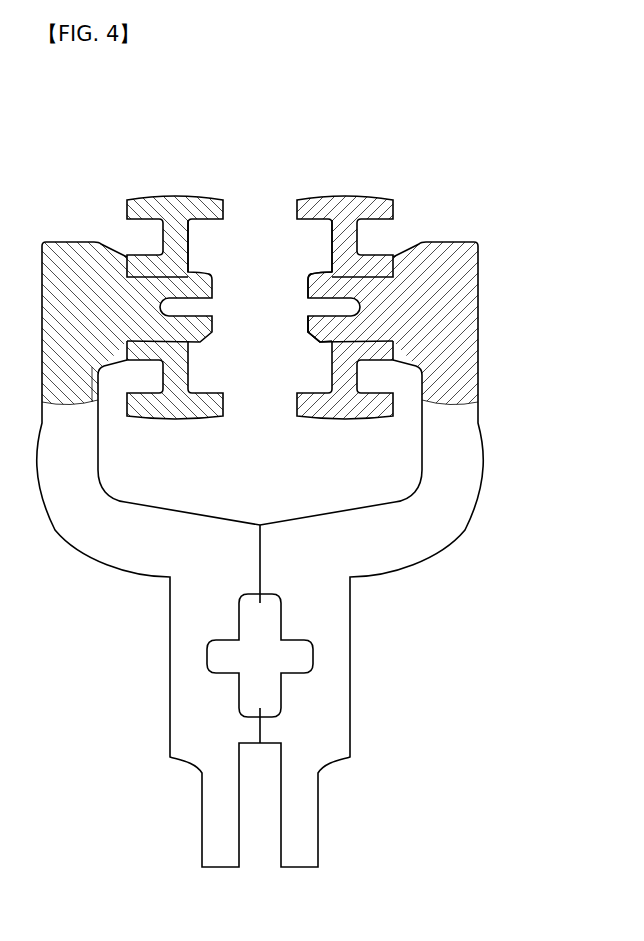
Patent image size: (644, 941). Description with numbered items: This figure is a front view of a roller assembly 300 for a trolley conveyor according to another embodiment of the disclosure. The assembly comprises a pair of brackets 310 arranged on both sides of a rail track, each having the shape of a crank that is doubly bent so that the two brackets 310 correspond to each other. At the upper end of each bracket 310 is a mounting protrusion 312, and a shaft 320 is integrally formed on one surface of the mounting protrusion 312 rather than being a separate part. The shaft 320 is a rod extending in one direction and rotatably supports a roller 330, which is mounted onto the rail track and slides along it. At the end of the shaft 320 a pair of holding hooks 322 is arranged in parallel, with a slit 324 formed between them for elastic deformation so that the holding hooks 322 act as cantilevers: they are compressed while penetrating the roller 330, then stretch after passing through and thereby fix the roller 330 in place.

The roller assembly 300 is at (466, 159).
The bracket 310 is at (478, 423).
The mounting protrusion 312 is at (408, 249).
The shaft 320 is at (320, 340).
The holding hook 322 is at (318, 270).
The slit 324 is at (311, 308).
The roller 330 is at (338, 195).